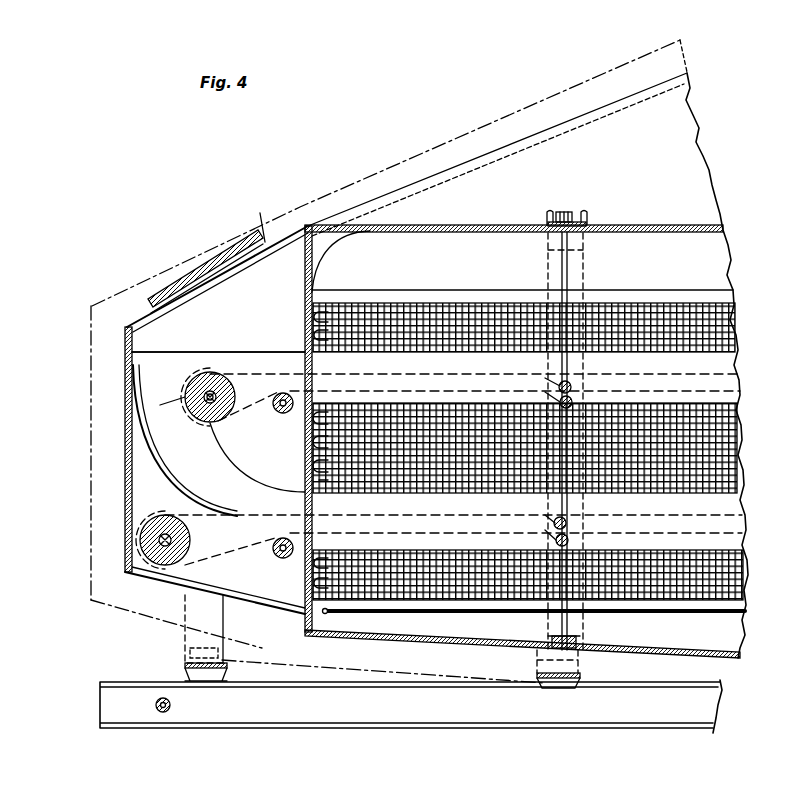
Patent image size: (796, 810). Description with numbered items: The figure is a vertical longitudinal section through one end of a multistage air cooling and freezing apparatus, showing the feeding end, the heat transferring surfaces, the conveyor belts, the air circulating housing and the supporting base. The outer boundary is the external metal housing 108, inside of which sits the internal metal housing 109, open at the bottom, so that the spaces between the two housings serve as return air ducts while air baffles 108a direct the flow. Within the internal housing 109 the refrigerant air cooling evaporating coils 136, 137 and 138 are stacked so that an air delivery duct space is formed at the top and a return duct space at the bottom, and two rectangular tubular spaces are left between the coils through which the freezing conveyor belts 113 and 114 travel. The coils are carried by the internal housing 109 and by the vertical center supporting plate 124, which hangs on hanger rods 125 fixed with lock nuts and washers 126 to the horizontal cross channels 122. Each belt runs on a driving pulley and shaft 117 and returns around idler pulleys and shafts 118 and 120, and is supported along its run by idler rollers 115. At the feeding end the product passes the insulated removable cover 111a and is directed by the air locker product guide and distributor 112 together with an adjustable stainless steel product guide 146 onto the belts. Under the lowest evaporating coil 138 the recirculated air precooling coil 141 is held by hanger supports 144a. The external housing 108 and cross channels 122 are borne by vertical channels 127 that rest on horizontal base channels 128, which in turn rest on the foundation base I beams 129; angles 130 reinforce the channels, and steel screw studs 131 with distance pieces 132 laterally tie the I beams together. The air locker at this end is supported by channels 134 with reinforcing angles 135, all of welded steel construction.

The external metal housing 108 is at (306, 292).
The air baffles 108a is at (322, 258).
The internal metal housing 109 is at (468, 226).
The insulated removable cover 111a is at (197, 273).
The air locker product guides and distributor 112 is at (262, 351).
The freezing conveyor belts 113 is at (217, 372).
The freezing conveyor belts 114 is at (230, 550).
The conveying belt supporting idler rollers 115 is at (285, 416).
The driving pulleys and shafts 117 is at (183, 380).
The idler pulleys and shafts 118 is at (228, 459).
The idler pulleys and shafts 120 is at (160, 540).
The horizontal cross channels 122 is at (592, 223).
The vertical center supporting plate 124 is at (398, 289).
The hanger rods 125 is at (570, 271).
The lock nuts and washers 126 is at (574, 213).
The vertical channels 127 is at (548, 262).
The horizontal base channels 128 is at (228, 674).
The foundation base I beams 129 is at (451, 728).
The angles 130 is at (580, 666).
The steel screw studs 131 is at (156, 706).
The distance pieces 132 is at (165, 697).
The channels 134 is at (187, 639).
The reinforcing angles 135 is at (262, 653).
The refrigerant air cooling evaporating coils 136 is at (473, 303).
The refrigerant air cooling evaporating coils 137 is at (452, 410).
The refrigerant air cooling evaporating coils 138 is at (404, 550).
The recirculated air precooling coils 141 is at (352, 620).
The hanger supports 144a is at (533, 640).
The adjustable stainless steel product guide 146 is at (162, 391).